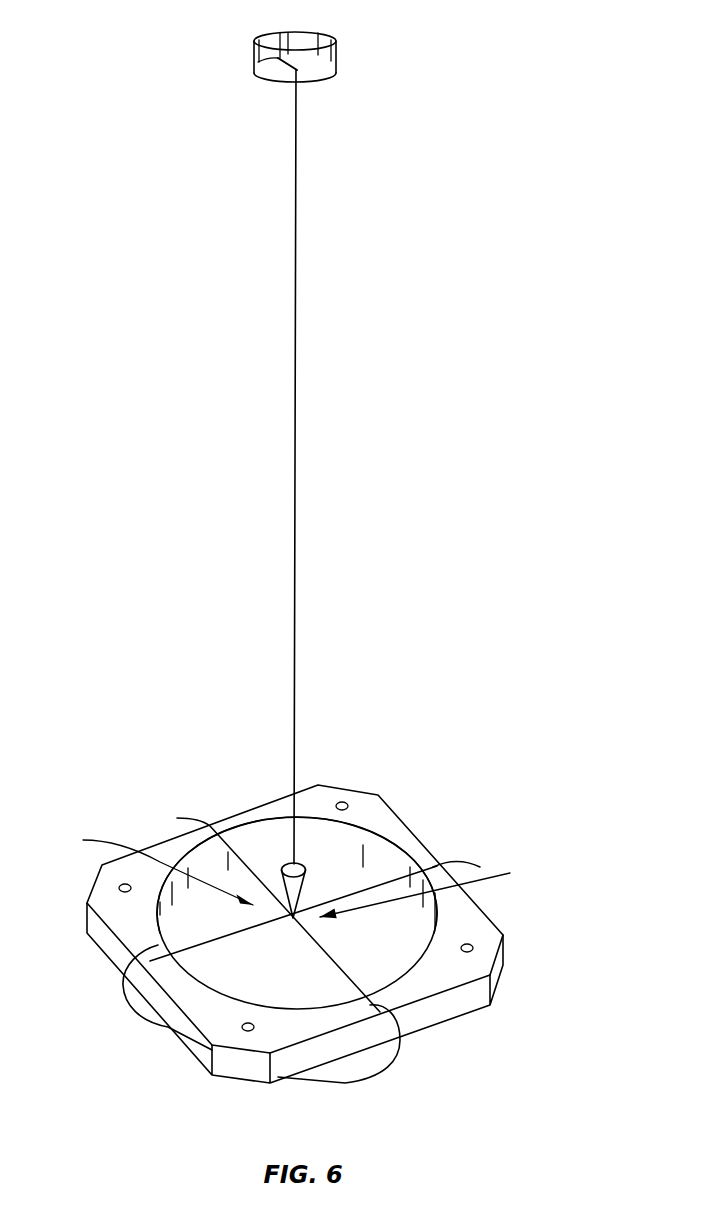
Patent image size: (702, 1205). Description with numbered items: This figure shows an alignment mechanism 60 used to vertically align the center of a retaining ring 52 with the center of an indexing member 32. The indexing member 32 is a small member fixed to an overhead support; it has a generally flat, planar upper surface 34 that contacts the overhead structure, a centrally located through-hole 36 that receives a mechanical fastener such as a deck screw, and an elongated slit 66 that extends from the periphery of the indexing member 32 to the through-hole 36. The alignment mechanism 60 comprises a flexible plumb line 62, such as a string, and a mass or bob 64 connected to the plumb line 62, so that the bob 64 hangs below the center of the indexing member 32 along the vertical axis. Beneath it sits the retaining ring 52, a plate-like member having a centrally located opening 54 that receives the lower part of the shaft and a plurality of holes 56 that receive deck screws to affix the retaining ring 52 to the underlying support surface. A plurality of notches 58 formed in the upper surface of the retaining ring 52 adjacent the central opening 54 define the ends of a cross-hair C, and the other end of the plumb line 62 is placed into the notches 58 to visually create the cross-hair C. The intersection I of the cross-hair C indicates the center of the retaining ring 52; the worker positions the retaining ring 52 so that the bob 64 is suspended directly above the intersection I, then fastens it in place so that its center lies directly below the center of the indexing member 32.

The indexing member 32 is at (327, 50).
The upper surface 34 is at (275, 72).
The through-hole 36 is at (298, 68).
The elongated slit 66 is at (277, 43).
The alignment mechanism 60 is at (462, 430).
The plumb line 62 is at (297, 656).
The bob 64 is at (293, 917).
The retaining ring 52 is at (392, 827).
The central opening 54 is at (218, 965).
The holes 56 is at (345, 804).
The notches 58 is at (435, 866).
The cross-hair C is at (157, 866).
The intersection I is at (420, 891).